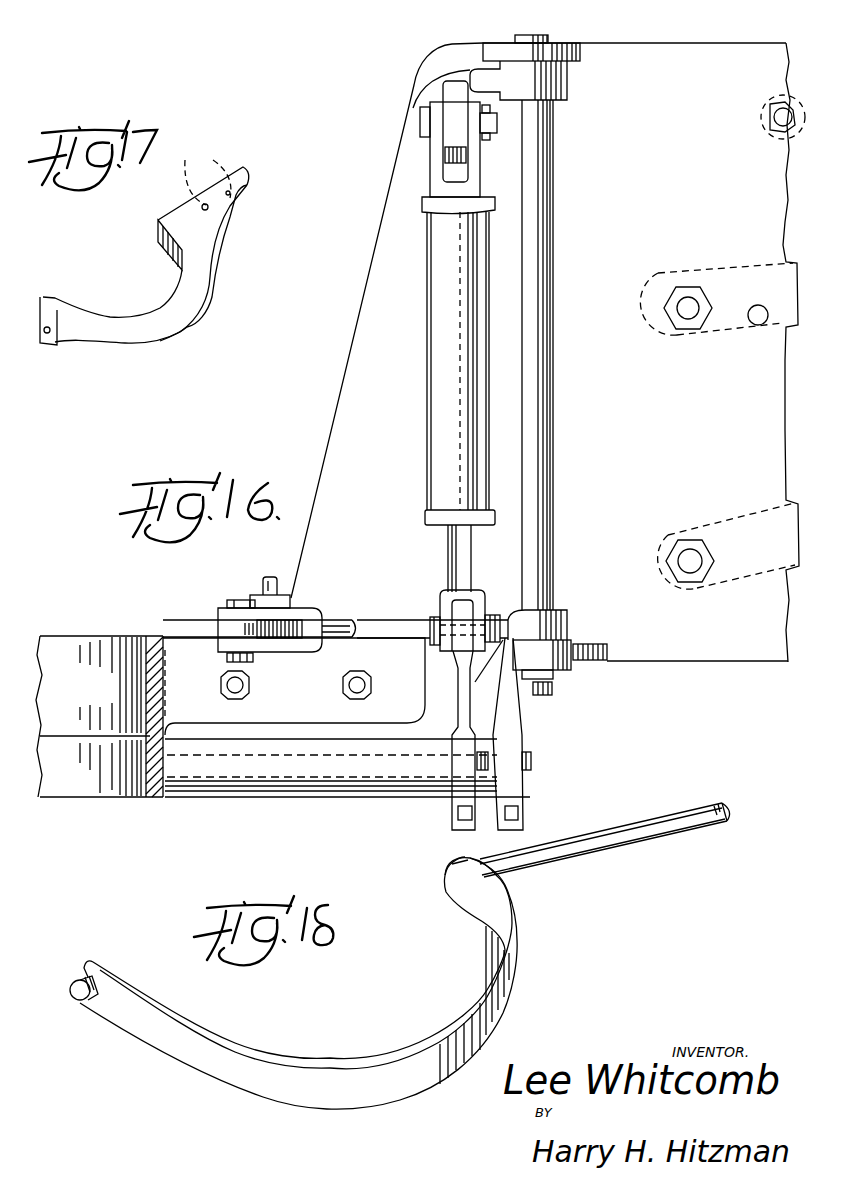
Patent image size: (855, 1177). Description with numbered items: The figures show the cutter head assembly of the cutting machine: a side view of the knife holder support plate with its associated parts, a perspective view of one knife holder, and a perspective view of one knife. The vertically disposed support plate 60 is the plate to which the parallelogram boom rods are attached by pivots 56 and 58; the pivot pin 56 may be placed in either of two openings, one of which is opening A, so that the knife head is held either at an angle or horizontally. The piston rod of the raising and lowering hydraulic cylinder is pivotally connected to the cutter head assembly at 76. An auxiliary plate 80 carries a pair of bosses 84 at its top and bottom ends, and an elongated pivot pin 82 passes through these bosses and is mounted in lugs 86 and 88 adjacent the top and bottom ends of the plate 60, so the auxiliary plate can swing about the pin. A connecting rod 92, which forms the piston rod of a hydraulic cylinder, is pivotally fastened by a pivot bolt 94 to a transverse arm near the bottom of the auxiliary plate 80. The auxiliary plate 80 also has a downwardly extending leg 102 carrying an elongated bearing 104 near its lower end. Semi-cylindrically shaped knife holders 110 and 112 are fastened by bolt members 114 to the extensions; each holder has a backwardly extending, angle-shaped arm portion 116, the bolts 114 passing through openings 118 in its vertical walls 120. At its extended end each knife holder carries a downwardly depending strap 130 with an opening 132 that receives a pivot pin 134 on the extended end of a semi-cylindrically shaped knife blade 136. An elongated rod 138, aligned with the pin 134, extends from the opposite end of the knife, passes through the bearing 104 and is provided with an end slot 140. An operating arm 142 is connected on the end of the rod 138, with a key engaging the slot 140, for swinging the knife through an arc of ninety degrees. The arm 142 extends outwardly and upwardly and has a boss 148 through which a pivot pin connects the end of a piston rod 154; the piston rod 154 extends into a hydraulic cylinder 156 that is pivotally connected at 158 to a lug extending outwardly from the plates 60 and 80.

In FIG. 16, the support plate 60 is at (324, 416).
In FIG. 16, the lug 86 is at (572, 52).
In FIG. 16, the bosses 84 is at (571, 91).
In FIG. 16, the auxiliary plate 80 is at (508, 415).
In FIG. 16, the elongated pivot pin 82 is at (552, 272).
In FIG. 16, the pivotal connection of hydraulic cylinder 158 is at (424, 122).
In FIG. 16, the hydraulic cylinder 156 is at (433, 343).
In FIG. 16, the piston rod 154 is at (460, 554).
In FIG. 16, the boss 148 is at (458, 616).
In FIG. 16, the lug 88 is at (562, 660).
In FIG. 16, the knife holder 110 is at (150, 686).
In FIG. 16, the downwardly extending leg 102 is at (418, 725).
In FIG. 16, the elongated bearing 104 is at (318, 793).
In FIG. 16, the vertical walls 120 is at (240, 712).
In FIG. 16, the pivot bolt 94 is at (240, 600).
In FIG. 16, the connecting rod 92 is at (336, 614).
In FIG. 16, the bolt members 114 is at (252, 690).
In FIG. 16, the operating arm 142 is at (515, 735).
In FIG. 16, the pivotal connection of piston rod 76 is at (780, 118).
In FIG. 16, the pivot pin 56 is at (690, 305).
In FIG. 16, the opening A is at (757, 327).
In FIG. 16, the pivot 58 is at (690, 560).
In FIG. 17, the knife holder 112 is at (190, 303).
In FIG. 17, the arm portion 116 is at (190, 228).
In FIG. 17, the openings 118 is at (207, 177).
In FIG. 17, the strap 130 is at (40, 318).
In FIG. 17, the opening 132 is at (47, 334).
In FIG. 18, the knife blade 136 is at (222, 1078).
In FIG. 18, the pivot pin 134 is at (76, 1000).
In FIG. 18, the elongated rod 138 is at (628, 852).
In FIG. 18, the end slot 140 is at (733, 800).